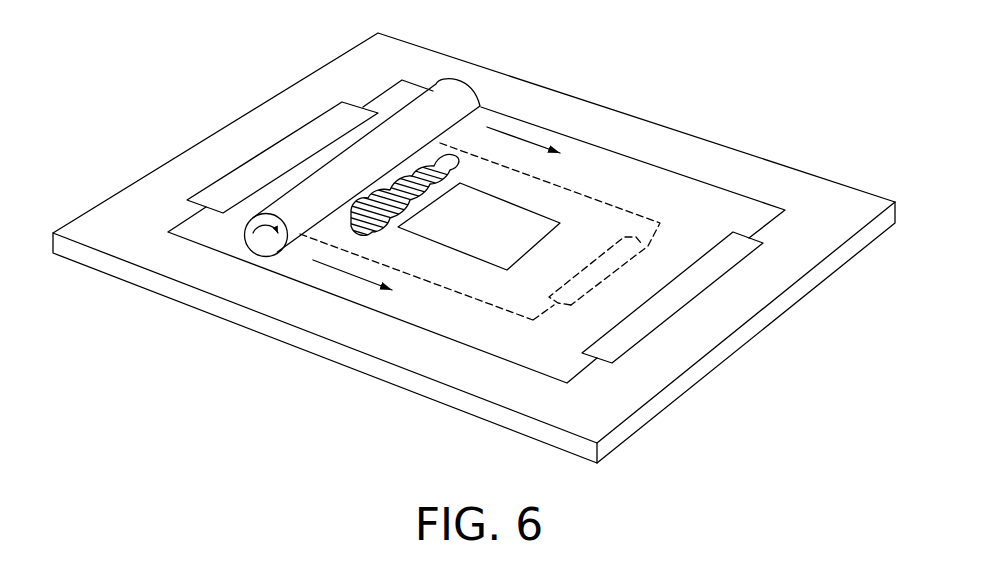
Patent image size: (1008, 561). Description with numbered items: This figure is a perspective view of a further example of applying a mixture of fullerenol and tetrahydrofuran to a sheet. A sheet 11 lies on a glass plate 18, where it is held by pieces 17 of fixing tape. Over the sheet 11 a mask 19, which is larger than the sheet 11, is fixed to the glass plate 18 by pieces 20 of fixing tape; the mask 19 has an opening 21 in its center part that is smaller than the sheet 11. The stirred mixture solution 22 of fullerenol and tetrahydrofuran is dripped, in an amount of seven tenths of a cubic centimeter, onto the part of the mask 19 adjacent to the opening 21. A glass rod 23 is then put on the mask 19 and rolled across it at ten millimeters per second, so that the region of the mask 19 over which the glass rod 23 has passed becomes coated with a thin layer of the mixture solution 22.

The sheet 11 is at (581, 192).
The pieces of fixing tape 17 is at (636, 237).
The glass plate 18 is at (650, 416).
The mask 19 is at (477, 352).
The pieces of fixing tape 20 is at (257, 153).
The opening 21 is at (470, 255).
The mixture solution 22 is at (455, 157).
The glass rod 23 is at (465, 96).